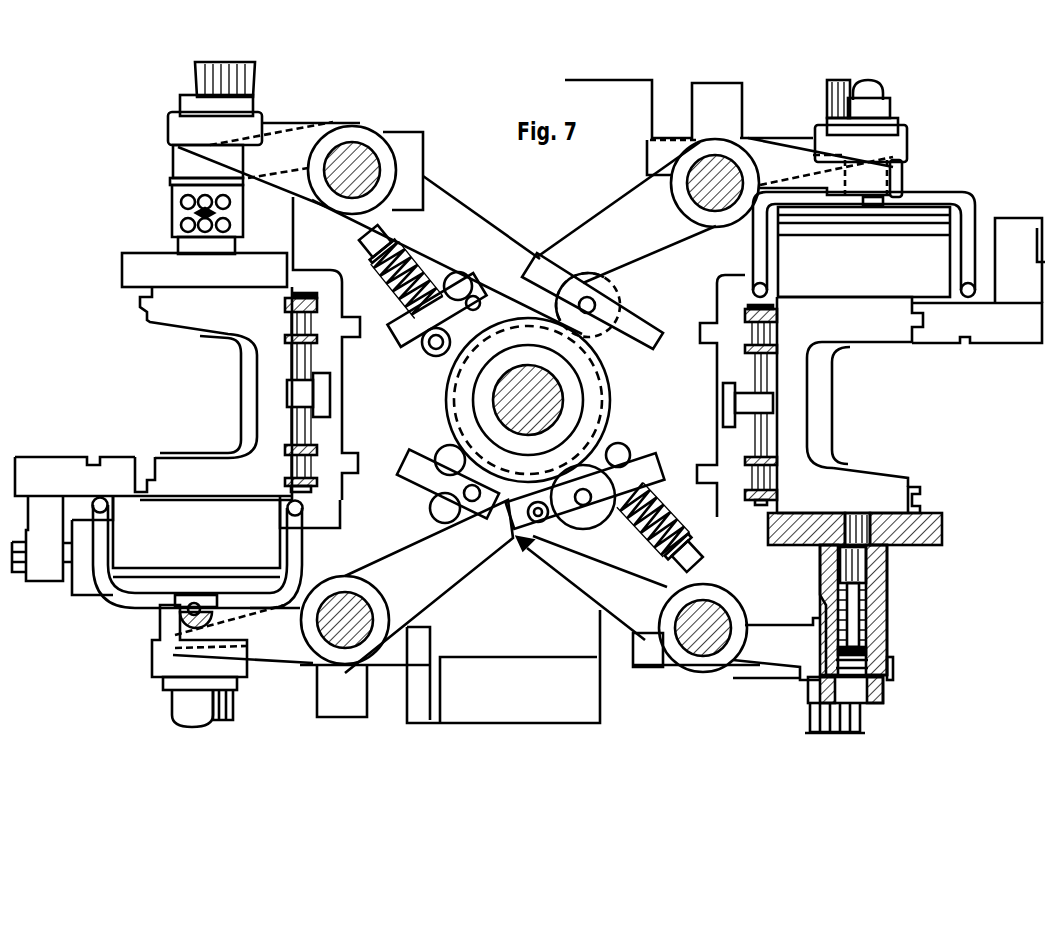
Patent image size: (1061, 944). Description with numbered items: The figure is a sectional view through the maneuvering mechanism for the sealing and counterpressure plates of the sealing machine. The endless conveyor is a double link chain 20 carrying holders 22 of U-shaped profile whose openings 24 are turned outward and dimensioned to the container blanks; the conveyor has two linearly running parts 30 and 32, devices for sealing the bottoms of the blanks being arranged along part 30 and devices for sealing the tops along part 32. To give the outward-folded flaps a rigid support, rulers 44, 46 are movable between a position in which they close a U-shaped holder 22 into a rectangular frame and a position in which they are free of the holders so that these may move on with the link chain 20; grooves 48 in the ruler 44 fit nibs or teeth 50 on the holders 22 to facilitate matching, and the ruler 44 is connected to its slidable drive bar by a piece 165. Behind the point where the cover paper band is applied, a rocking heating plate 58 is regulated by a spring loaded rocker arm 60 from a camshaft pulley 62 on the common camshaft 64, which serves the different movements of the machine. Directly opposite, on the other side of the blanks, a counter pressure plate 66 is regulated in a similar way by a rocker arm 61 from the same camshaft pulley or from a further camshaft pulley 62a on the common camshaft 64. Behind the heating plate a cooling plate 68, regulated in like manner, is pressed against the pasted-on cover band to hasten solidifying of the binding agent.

The double link chain 20 is at (312, 455).
The holder 22 is at (863, 343).
The opening 24 is at (165, 393).
The linearly running part 30 is at (312, 333).
The linearly running part 32 is at (745, 320).
The ruler 44 is at (118, 470).
The ruler 46 is at (938, 333).
The groove 48 is at (146, 468).
The nib or tooth 50 is at (145, 301).
The rocking heating plate 58 is at (140, 553).
The spring loaded rocker arm 60 is at (632, 205).
The rocker arm 61 is at (455, 215).
The camshaft pulley 62 is at (590, 414).
The camshaft pulley 62a is at (604, 392).
The common camshaft 64 is at (500, 403).
The counter pressure plate 66 is at (125, 270).
The cooling plate 68 is at (788, 245).
The piece 165 is at (55, 578).